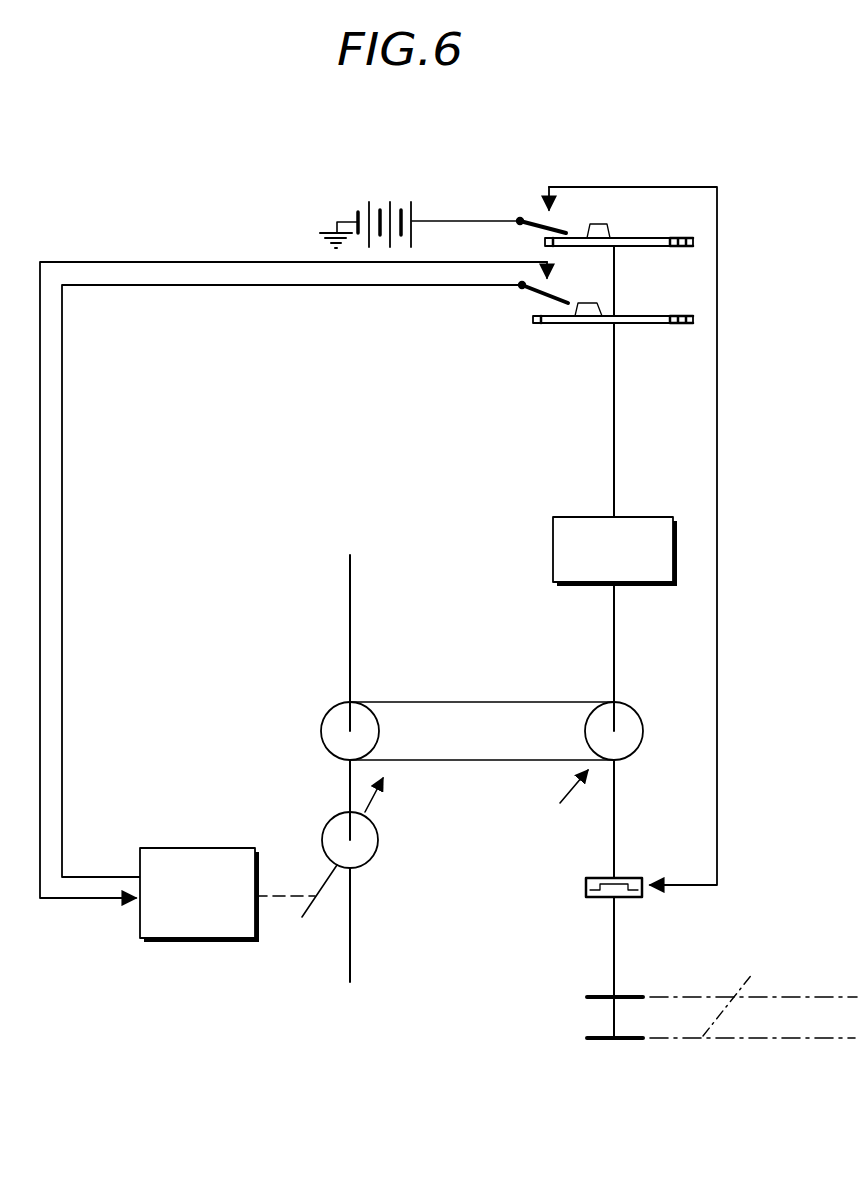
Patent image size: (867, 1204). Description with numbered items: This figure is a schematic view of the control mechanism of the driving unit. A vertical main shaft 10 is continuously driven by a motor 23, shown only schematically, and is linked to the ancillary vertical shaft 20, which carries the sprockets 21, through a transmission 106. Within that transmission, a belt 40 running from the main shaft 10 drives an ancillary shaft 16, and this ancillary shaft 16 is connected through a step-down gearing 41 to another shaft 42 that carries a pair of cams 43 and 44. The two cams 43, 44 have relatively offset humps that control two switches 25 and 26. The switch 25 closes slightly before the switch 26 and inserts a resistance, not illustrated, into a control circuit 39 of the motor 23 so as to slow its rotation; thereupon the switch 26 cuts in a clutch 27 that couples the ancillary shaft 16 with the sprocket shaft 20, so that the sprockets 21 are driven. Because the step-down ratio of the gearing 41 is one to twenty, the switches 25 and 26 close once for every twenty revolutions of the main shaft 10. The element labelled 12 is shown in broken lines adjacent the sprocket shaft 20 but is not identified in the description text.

The main shaft 10 is at (350, 624).
The driven member 12 is at (750, 995).
The ancillary shaft 16 is at (616, 658).
The ancillary vertical shaft 20 is at (615, 950).
The sprockets 21 is at (598, 1036).
The motor 23 is at (375, 858).
The switch 25 is at (542, 289).
The switch 26 is at (534, 214).
The clutch 27 is at (620, 880).
The control circuit 39 is at (190, 940).
The belt 40 is at (514, 664).
The step-down gearing 41 is at (553, 569).
The shaft 42 is at (612, 437).
The cam 43 is at (676, 290).
The cam 44 is at (690, 208).
The transmission 106 is at (551, 794).